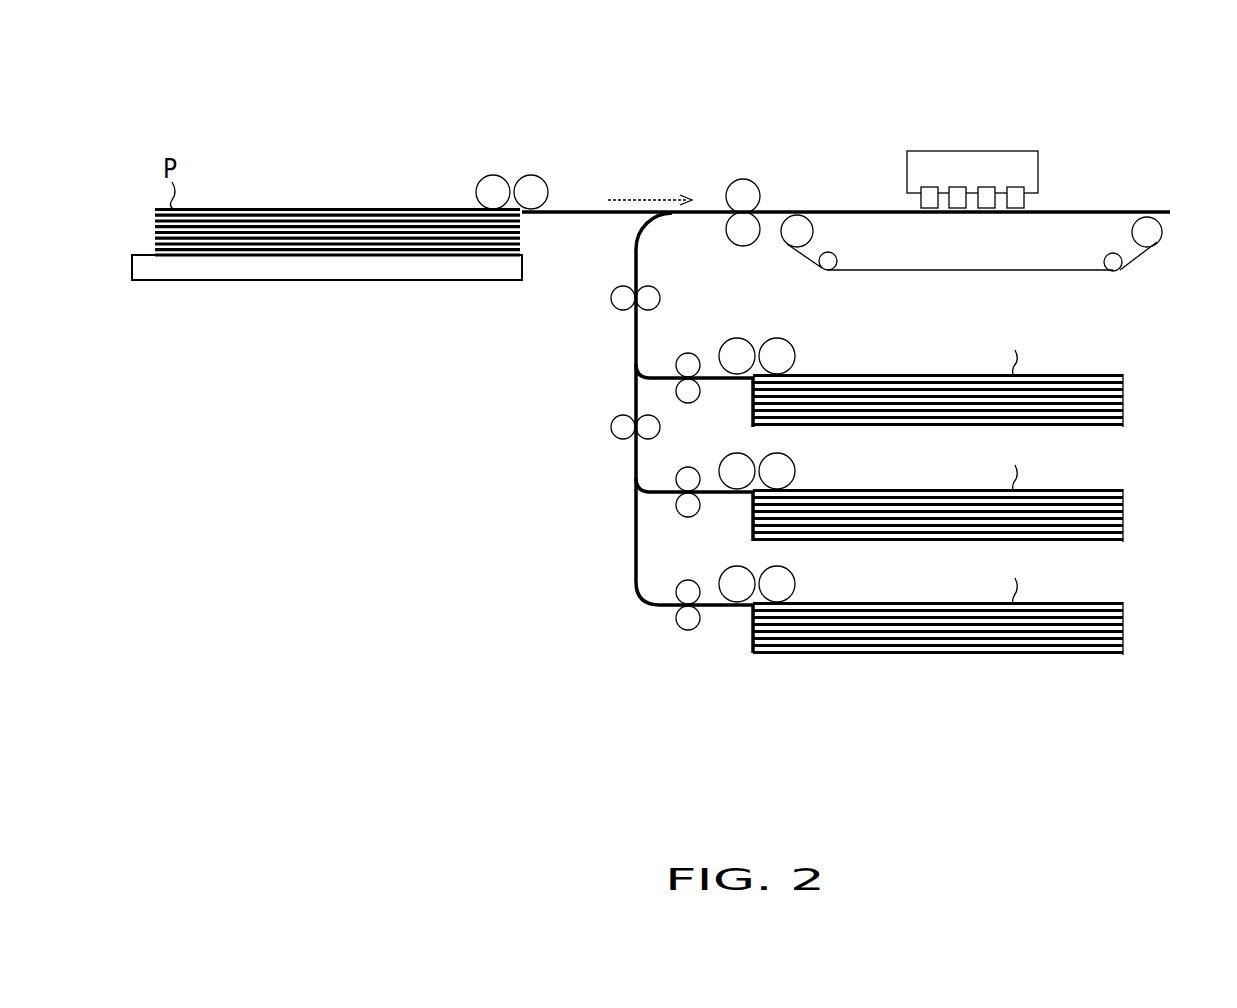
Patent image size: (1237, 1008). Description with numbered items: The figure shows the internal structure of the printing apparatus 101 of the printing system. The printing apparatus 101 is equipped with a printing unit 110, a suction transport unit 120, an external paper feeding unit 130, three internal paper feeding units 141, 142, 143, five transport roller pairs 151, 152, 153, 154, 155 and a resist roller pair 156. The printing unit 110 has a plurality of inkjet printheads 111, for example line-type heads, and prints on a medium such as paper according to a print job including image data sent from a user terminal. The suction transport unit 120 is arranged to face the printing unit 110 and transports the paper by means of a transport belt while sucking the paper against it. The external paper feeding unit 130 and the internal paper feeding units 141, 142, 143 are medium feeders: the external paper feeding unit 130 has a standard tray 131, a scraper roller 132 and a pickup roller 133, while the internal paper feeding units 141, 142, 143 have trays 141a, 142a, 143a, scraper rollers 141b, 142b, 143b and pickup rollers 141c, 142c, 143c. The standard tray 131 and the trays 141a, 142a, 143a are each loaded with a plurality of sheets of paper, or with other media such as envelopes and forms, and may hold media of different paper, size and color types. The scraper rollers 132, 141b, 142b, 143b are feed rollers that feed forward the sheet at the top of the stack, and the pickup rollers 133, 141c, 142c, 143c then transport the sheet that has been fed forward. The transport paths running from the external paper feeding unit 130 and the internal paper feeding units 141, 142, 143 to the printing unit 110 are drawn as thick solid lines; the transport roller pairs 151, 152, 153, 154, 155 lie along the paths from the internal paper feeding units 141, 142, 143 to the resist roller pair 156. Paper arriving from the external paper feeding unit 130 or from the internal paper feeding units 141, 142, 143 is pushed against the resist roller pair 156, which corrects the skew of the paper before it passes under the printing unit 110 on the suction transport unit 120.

The printing apparatus 101 is at (583, 115).
The printing unit 110 is at (978, 151).
The inkjet printheads 111 is at (957, 187).
The suction transport unit 120 is at (980, 272).
The external paper feeding unit 130 is at (384, 283).
The standard tray 131 is at (204, 283).
The scraper roller 132 is at (494, 175).
The pickup roller 133 is at (531, 175).
The internal paper feeding unit 141 is at (957, 358).
The tray 141a is at (1127, 398).
The scraper roller 141b is at (797, 351).
The pickup roller 141c is at (740, 337).
The internal paper feeding unit 142 is at (945, 473).
The tray 142a is at (1127, 512).
The scraper roller 142b is at (797, 466).
The pickup roller 142c is at (732, 451).
The internal paper feeding unit 143 is at (945, 586).
The tray 143a is at (1127, 634).
The scraper roller 143b is at (797, 579).
The pickup roller 143c is at (730, 564).
The transport roller pair 151 is at (674, 388).
The transport roller pair 152 is at (674, 503).
The transport roller pair 153 is at (688, 632).
The transport roller pair 154 is at (610, 430).
The transport roller pair 155 is at (610, 300).
The resist roller pair 156 is at (746, 180).